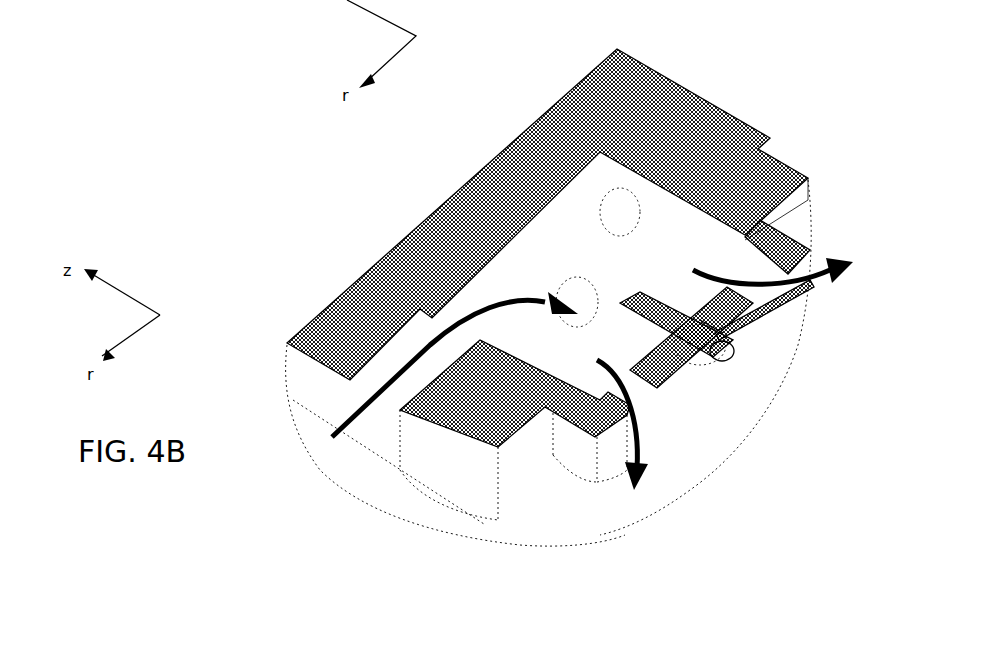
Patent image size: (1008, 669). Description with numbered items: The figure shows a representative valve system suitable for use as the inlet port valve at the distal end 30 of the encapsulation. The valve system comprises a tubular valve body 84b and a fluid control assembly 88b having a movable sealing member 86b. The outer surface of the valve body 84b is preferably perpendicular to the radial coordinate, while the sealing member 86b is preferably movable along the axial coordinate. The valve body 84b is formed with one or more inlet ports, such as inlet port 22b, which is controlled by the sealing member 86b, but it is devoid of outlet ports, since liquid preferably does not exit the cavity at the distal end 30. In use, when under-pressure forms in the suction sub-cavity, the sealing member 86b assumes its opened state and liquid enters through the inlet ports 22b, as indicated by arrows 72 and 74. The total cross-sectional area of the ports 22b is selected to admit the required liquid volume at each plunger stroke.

The distal end 30 is at (251, 214).
The inlet port 22b is at (594, 302).
The arrow 72 is at (372, 405).
The arrow 74 is at (823, 273).
The tubular valve body 84b is at (416, 443).
The movable sealing member 86b is at (790, 282).
The fluid control assembly 88b is at (797, 433).